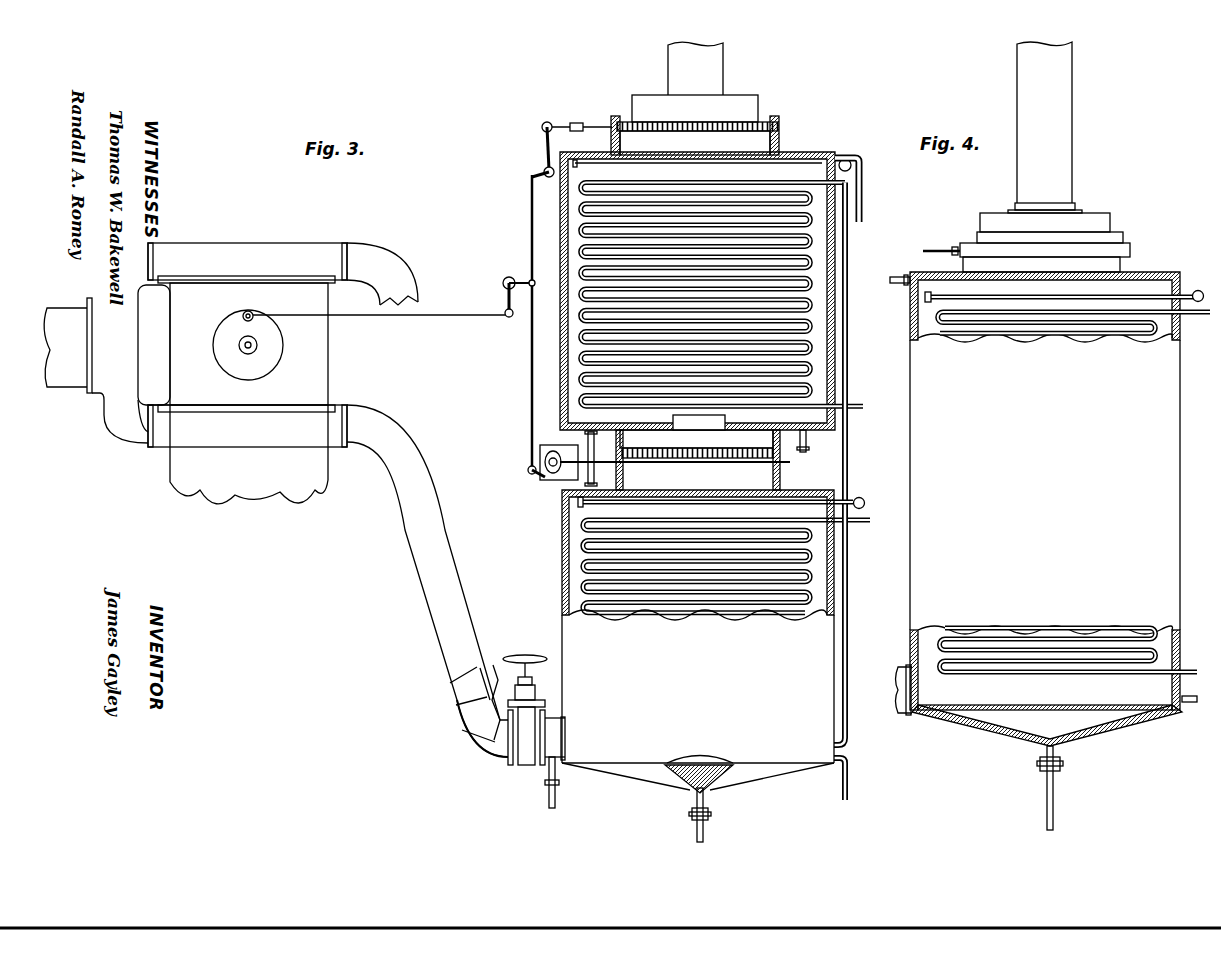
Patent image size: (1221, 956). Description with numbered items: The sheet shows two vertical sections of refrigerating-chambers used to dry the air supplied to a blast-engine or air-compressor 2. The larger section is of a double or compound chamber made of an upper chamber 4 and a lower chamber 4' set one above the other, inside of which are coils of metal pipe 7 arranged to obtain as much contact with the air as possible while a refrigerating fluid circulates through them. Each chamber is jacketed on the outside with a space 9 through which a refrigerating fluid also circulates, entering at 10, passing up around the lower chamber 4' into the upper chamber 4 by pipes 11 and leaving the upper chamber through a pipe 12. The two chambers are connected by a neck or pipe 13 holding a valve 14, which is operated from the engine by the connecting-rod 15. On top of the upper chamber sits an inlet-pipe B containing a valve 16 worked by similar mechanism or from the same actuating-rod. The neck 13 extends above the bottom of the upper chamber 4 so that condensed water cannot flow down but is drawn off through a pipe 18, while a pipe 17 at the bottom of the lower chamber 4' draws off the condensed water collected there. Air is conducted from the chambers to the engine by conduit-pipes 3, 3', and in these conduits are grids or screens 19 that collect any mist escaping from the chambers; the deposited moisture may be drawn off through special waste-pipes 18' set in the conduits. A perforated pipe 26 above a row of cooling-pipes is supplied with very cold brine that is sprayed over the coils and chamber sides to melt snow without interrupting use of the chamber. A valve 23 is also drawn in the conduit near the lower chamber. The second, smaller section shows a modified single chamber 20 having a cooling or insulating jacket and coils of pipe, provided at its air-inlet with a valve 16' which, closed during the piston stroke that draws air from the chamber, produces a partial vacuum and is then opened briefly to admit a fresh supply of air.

In FIG. 3, the blast-engine or air-compressor 2 is at (195, 373).
In FIG. 3, the conduit-pipe 3 is at (427, 581).
In FIG. 3, the conduit-pipe 3' is at (382, 274).
In FIG. 4, the conduit-pipe 3' is at (894, 690).
In FIG. 3, the connecting-rod 15 is at (363, 318).
In FIG. 3, the grids or screens 19 is at (470, 732).
In FIG. 3, the valve 23 is at (527, 760).
In FIG. 3, the waste-pipe 18' is at (568, 782).
In FIG. 3, the inlet-pipe B is at (695, 68).
In FIG. 4, the inlet-pipe B is at (1044, 122).
In FIG. 3, the valve 16 is at (695, 136).
In FIG. 3, the upper refrigerating-chamber 4 is at (714, 291).
In FIG. 3, the lower refrigerating-chamber 4' is at (698, 641).
In FIG. 3, the coils of metal pipe 7 is at (806, 283).
In FIG. 3, the perforated pipe 26 is at (797, 168).
In FIG. 3, the pipe 12 is at (861, 207).
In FIG. 4, the pipe 12 is at (921, 266).
In FIG. 3, the refrigerating-fluid inlet 10 is at (841, 790).
In FIG. 4, the refrigerating-fluid inlet 10 is at (1192, 710).
In FIG. 3, the neck or pipe 13 is at (696, 439).
In FIG. 3, the valve 14 is at (713, 460).
In FIG. 3, the pipe 11 is at (604, 458).
In FIG. 3, the pipe 18 is at (816, 441).
In FIG. 3, the jacket space 9 is at (855, 603).
In FIG. 4, the jacket space 9 is at (912, 318).
In FIG. 3, the pipe 17 is at (703, 833).
In FIG. 4, the pipe 17 is at (1053, 808).
In FIG. 4, the valve 16' is at (1057, 243).
In FIG. 4, the single chamber 20 is at (1046, 509).